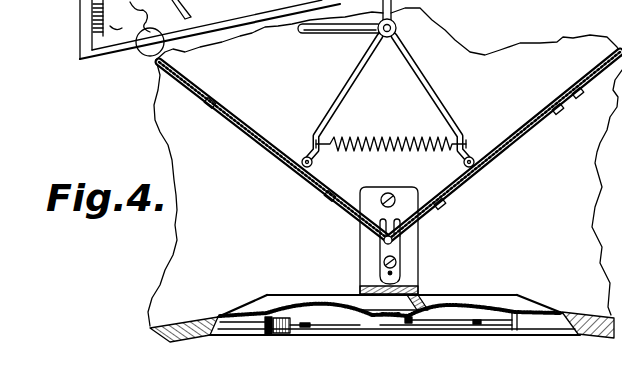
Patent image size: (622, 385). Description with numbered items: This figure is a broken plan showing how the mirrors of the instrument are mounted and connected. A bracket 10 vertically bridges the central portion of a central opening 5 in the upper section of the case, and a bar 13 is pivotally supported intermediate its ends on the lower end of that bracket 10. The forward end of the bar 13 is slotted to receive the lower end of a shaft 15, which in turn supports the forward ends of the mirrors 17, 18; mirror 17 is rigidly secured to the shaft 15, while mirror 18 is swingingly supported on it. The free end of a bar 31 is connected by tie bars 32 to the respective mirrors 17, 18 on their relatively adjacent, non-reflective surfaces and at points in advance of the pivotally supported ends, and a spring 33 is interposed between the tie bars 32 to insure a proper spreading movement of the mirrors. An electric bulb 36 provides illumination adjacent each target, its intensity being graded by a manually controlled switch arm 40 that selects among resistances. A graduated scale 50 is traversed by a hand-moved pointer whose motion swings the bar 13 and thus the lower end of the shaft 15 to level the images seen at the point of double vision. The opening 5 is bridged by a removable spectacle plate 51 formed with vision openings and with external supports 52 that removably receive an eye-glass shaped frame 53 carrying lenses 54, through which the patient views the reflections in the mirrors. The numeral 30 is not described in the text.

The central opening 5 is at (236, 296).
The bracket 10 is at (420, 270).
The bar 13 is at (398, 257).
The shaft 15 is at (410, 214).
The mirror 17 is at (253, 148).
The mirror 18 is at (538, 163).
The tie bars 32 is at (347, 82).
The spring 33 is at (386, 138).
The switch arm 40 is at (382, 273).
The spectacle plate 51 is at (523, 308).
The external supports 52 is at (305, 318).
The frame 53 is at (508, 315).
The lenses 54 is at (278, 312).
The bar 31 is at (113, 4).
The electric bulb 36 is at (115, 26).
The scale 50 is at (417, 5).
The adjacent figure parts 30 is at (607, 182).